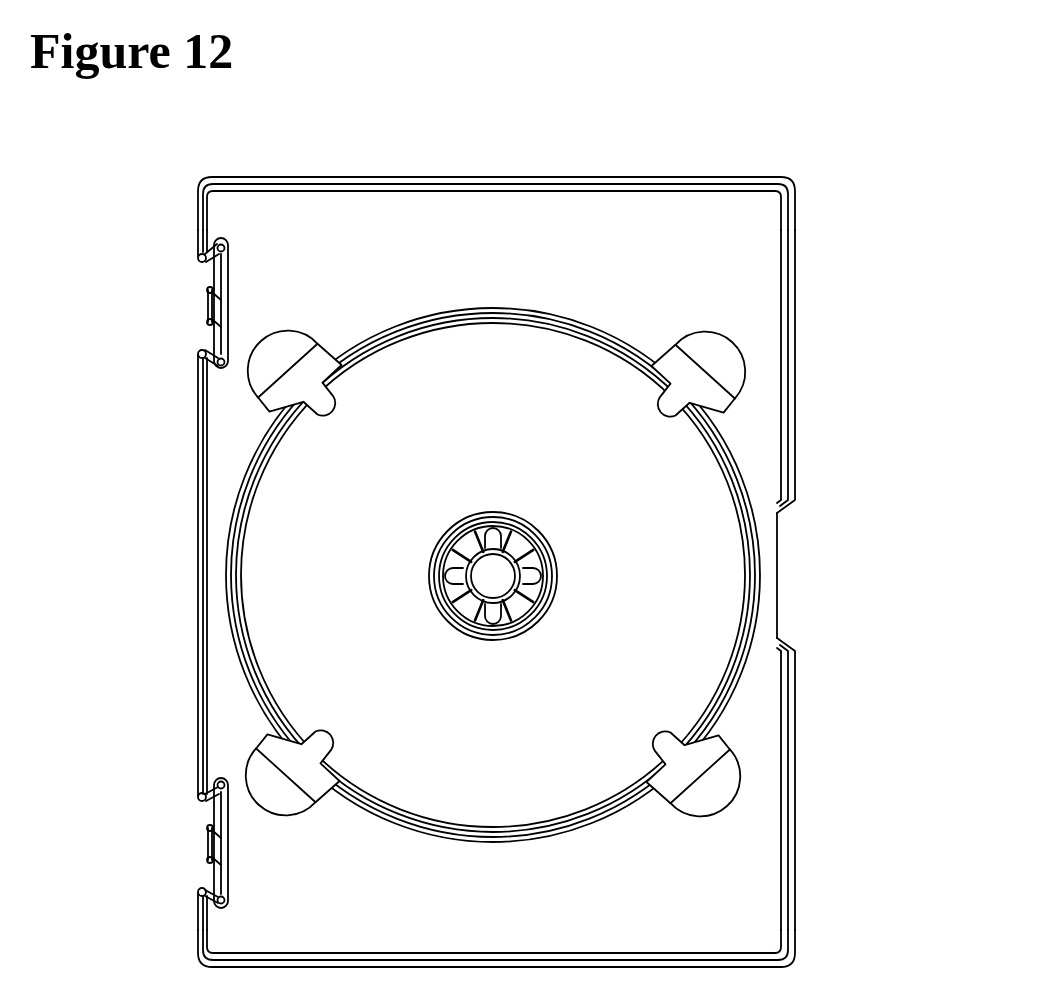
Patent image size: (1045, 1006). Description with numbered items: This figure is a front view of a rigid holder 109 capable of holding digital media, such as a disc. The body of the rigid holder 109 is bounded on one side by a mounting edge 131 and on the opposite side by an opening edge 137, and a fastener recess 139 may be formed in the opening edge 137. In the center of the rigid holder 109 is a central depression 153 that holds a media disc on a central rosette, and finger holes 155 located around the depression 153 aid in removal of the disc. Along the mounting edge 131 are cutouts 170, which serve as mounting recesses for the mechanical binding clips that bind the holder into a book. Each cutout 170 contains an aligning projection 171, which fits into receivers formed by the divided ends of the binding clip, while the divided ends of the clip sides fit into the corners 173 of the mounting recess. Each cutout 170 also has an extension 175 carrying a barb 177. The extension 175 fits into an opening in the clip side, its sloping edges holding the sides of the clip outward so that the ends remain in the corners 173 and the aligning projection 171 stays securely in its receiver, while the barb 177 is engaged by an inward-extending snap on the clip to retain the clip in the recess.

The rigid holder 109 is at (812, 254).
The mounting edge 131 is at (198, 725).
The opening edge 137 is at (790, 352).
The fastener recess 139 is at (778, 556).
The central depression 153 is at (528, 307).
The finger hole 155 is at (305, 335).
The cutout 170 is at (213, 340).
The aligning projection 171 is at (224, 263).
The corner 173 is at (228, 888).
The extension 175 is at (220, 298).
The barb 177 is at (206, 290).